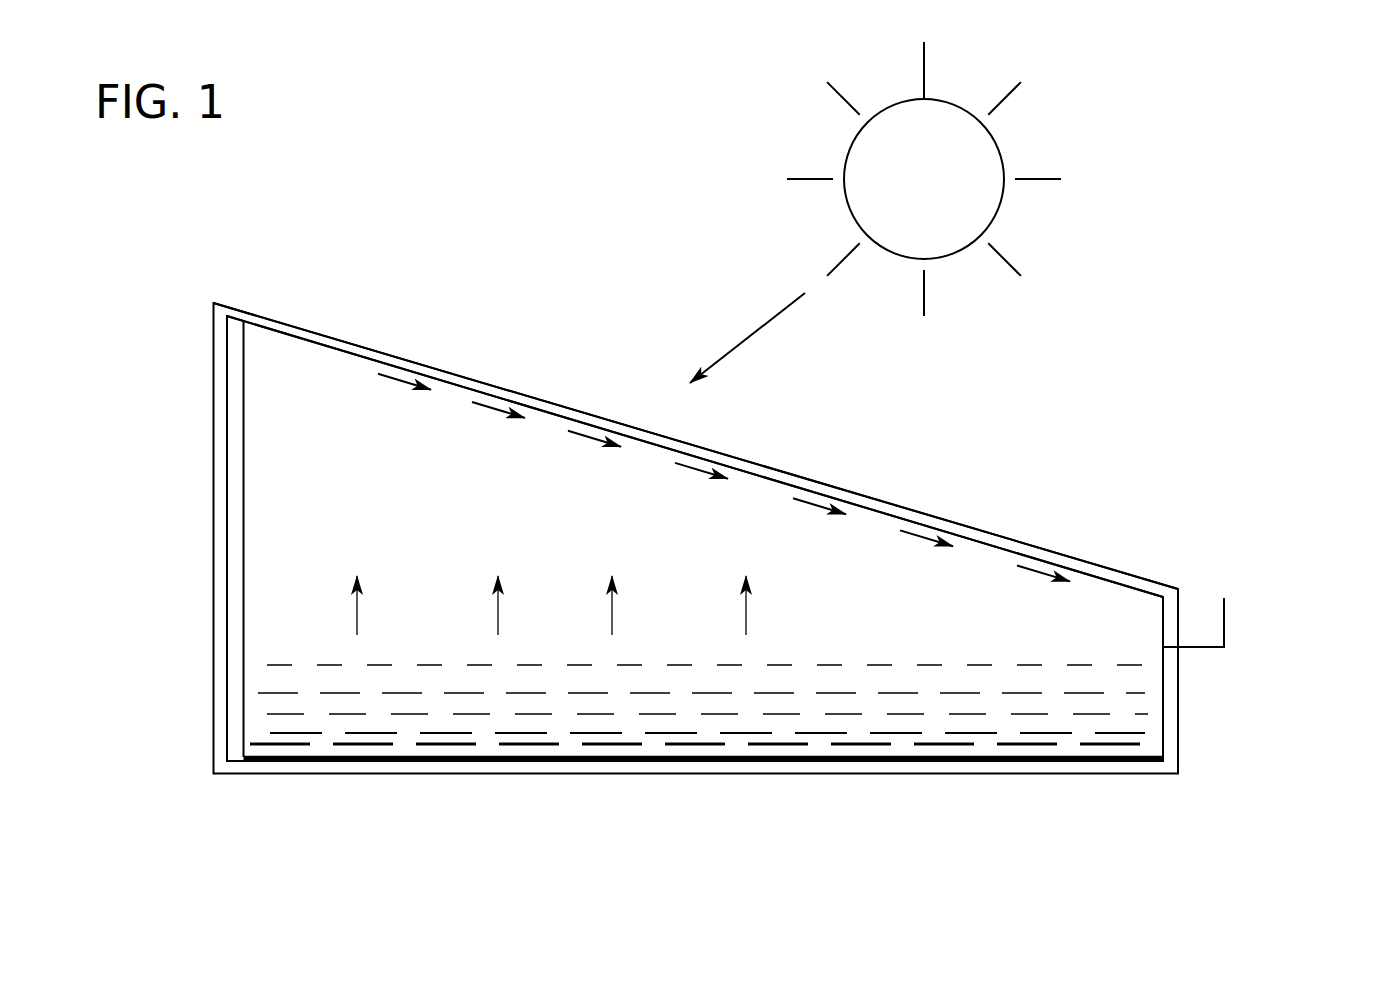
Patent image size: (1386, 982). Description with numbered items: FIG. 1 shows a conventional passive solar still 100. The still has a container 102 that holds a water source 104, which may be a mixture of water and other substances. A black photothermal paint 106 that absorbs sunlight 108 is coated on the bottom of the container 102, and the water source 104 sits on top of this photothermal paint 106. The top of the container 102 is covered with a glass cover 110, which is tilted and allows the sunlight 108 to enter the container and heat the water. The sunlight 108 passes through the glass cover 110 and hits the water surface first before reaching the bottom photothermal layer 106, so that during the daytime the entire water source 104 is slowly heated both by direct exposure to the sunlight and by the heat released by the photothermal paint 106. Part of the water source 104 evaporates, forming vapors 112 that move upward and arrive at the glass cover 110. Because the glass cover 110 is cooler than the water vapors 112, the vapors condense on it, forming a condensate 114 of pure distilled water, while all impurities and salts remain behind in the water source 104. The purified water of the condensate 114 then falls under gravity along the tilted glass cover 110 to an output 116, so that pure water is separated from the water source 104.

The passive solar still 100 is at (510, 202).
The container 102 is at (213, 392).
The water 104 is at (558, 692).
The black photothermal paint 106 is at (315, 750).
The sunlight 108 is at (739, 342).
The glass cover 110 is at (983, 508).
The vapors 112 is at (747, 601).
The condensate 114 is at (503, 408).
The output 116 is at (1238, 626).